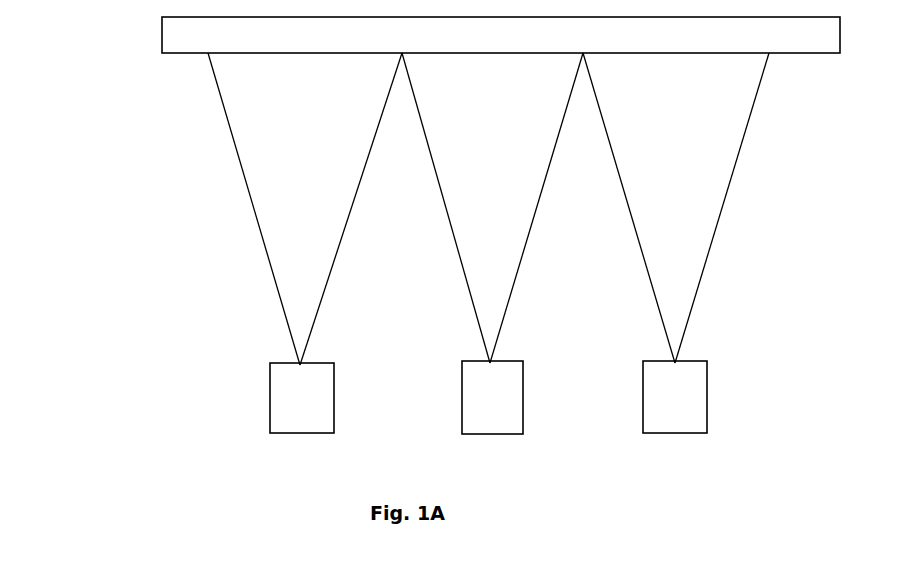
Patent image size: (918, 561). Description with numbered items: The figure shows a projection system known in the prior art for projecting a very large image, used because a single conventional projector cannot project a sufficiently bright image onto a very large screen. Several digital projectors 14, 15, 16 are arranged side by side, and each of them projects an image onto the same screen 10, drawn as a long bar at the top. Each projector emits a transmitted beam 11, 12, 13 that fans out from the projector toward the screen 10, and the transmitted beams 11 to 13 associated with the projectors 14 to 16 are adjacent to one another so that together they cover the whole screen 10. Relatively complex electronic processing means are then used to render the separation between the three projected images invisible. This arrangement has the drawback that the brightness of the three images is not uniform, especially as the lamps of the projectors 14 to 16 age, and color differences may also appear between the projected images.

The screen 10 is at (185, 43).
The transmitted beam 11 is at (255, 228).
The transmitted beam 12 is at (478, 244).
The transmitted beam 13 is at (672, 220).
The digital projector 14 is at (302, 402).
The digital projector 15 is at (487, 423).
The digital projector 16 is at (665, 393).